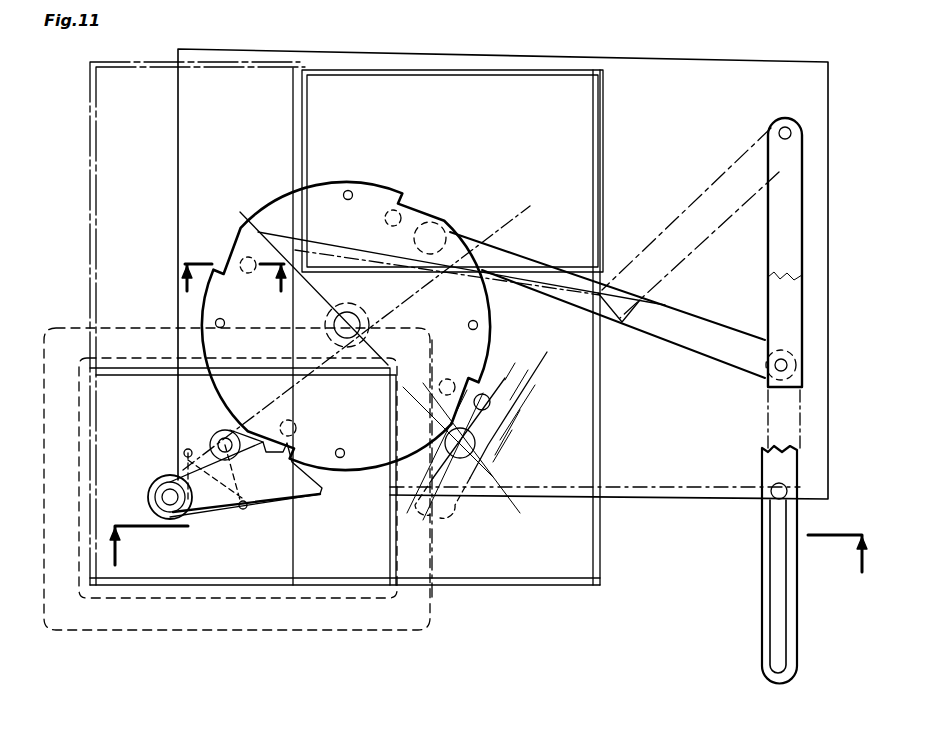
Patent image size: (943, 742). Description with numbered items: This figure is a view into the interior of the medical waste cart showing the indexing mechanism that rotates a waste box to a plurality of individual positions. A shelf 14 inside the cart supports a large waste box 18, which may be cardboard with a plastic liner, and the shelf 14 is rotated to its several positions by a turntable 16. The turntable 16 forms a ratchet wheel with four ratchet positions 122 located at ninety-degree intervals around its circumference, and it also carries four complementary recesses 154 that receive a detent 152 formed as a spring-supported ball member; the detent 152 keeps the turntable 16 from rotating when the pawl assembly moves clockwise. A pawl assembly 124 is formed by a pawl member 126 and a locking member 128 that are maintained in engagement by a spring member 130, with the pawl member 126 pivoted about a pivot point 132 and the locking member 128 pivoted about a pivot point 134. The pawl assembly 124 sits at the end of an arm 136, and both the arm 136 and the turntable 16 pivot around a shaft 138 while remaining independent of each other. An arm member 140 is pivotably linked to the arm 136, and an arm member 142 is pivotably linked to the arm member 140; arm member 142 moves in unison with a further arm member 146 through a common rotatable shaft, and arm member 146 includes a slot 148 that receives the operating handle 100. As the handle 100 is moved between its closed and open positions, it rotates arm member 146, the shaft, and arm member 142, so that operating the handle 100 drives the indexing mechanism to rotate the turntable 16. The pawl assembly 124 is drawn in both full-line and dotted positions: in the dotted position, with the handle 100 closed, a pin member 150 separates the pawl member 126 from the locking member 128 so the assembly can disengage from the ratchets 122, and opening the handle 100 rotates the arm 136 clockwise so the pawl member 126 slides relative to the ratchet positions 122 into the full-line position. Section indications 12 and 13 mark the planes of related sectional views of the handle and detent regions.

The shelf 14 is at (607, 98).
The waste box 18 is at (604, 182).
The turntable 16 is at (326, 185).
The shaft 138 is at (380, 330).
The complementary recesses 154 is at (390, 212).
The ratchet positions 122 is at (412, 197).
The detent 152 is at (262, 206).
The arm 136 is at (366, 262).
The section line 13 is at (236, 267).
The lockable hinged doors 12 is at (487, 538).
The arm member 140 is at (483, 248).
The arm member 146 is at (784, 167).
The slot 148 is at (836, 575).
The operating handle 100 is at (773, 502).
The arm member 142 is at (775, 270).
The pin member 150 is at (486, 394).
The locking member 128 is at (528, 458).
The pawl member 126 is at (282, 447).
The pivot point 132 is at (215, 440).
The pivot point 134 is at (173, 515).
The spring member 130 is at (212, 503).
The pawl assembly 124 is at (552, 413).